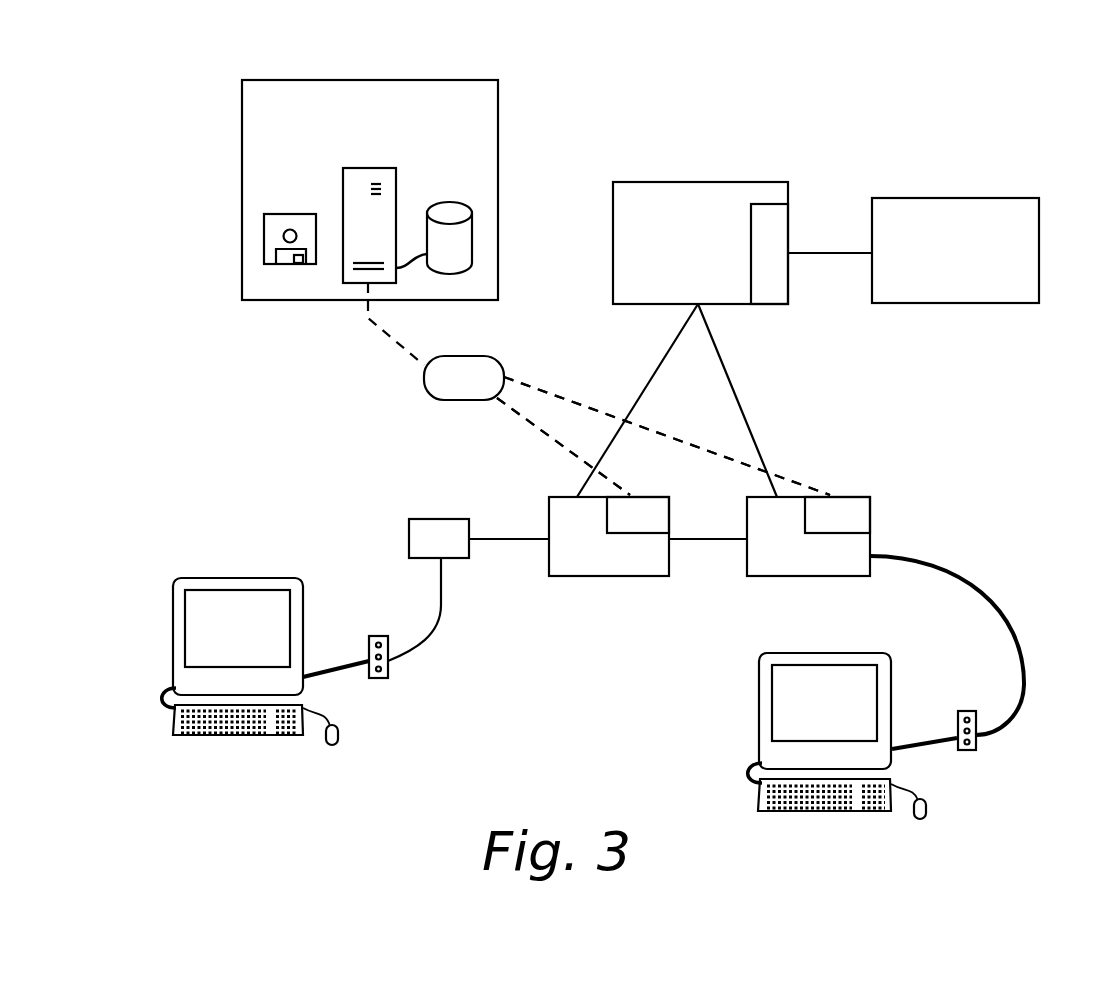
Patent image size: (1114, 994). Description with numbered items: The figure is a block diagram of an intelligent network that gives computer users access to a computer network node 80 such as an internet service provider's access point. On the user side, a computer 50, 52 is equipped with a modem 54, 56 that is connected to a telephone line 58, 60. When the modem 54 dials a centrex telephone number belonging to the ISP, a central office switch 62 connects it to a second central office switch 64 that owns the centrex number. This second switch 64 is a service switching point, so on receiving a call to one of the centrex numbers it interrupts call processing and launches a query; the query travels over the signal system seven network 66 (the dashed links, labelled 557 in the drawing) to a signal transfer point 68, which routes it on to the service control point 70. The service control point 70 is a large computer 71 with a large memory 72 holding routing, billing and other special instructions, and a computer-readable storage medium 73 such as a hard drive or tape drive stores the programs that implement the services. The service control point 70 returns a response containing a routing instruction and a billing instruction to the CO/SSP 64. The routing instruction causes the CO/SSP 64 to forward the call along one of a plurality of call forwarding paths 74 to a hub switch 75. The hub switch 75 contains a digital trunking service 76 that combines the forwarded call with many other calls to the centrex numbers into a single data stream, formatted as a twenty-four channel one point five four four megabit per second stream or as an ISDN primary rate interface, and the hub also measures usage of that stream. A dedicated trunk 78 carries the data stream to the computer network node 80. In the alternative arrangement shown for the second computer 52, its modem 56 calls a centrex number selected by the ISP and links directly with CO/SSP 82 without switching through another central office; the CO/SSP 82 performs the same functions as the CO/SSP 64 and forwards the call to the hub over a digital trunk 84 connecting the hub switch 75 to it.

The computer 50 is at (197, 578).
The computer 52 is at (759, 686).
The modem 54 is at (380, 636).
The modem 56 is at (965, 750).
The telephone line 58 is at (437, 623).
The telephone line 60 is at (1025, 697).
The central office switch 62 is at (428, 519).
The second central office switch (CO/SSP) 64 is at (669, 563).
The signal system 7 (SS7) 66 is at (383, 327).
The STP 68 is at (424, 378).
The SCP 70 is at (242, 122).
The large computer 71 is at (385, 168).
The large memory 72 is at (450, 202).
The computer-readable storage medium 73 is at (299, 214).
The call forwarding paths 74 is at (668, 348).
The hub switch 75 is at (666, 182).
The digital trunking service (DTS) 76 is at (789, 287).
The dedicated trunk 78 is at (823, 253).
The computer network node 80 is at (985, 198).
The CO/SSP 82 is at (812, 576).
The digital trunk 84 is at (752, 427).
The signaling message 557 is at (663, 436).